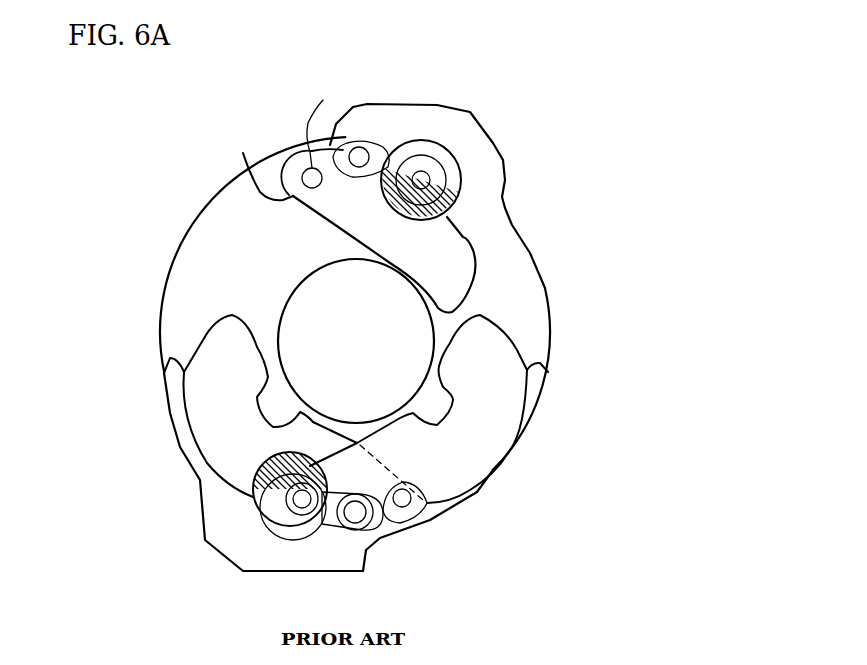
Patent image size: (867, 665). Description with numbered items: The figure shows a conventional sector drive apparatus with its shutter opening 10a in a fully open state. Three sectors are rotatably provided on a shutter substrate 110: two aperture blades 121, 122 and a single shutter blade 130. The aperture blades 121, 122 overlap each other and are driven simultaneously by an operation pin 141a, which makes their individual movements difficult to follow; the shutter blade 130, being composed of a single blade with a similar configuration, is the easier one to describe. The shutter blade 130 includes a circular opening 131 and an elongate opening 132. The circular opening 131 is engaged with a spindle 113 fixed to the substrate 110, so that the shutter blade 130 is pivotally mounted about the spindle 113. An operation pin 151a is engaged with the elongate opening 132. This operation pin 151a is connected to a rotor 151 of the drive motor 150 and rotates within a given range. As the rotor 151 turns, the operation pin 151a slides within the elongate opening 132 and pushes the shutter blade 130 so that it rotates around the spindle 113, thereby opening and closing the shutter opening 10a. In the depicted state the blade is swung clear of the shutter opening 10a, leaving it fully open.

The shutter opening 10a is at (288, 313).
The shutter substrate 110 is at (537, 258).
The spindle 113 is at (312, 170).
The aperture blade 121 is at (164, 371).
The aperture blade 122 is at (548, 372).
The shutter blade 130 is at (465, 237).
The circular opening 131 is at (243, 153).
The elongate opening 132 is at (323, 100).
The operation pin 141a is at (355, 512).
The drive motor 150 is at (466, 158).
The rotor 151 is at (421, 172).
The operation pin 151a is at (350, 142).